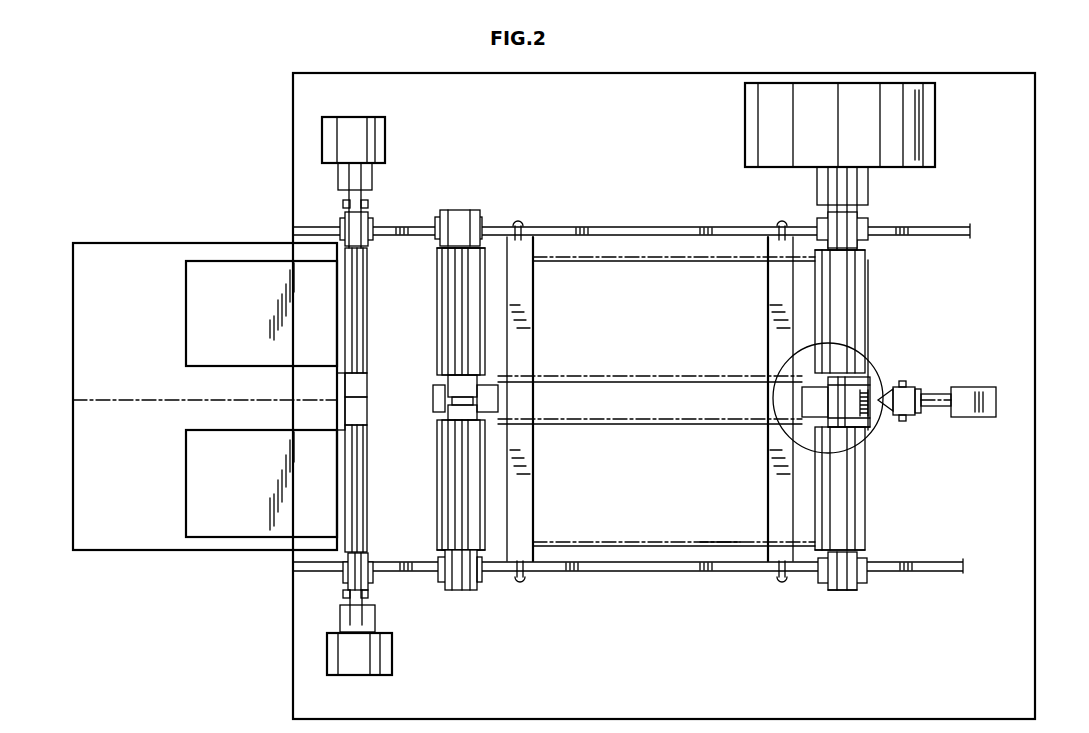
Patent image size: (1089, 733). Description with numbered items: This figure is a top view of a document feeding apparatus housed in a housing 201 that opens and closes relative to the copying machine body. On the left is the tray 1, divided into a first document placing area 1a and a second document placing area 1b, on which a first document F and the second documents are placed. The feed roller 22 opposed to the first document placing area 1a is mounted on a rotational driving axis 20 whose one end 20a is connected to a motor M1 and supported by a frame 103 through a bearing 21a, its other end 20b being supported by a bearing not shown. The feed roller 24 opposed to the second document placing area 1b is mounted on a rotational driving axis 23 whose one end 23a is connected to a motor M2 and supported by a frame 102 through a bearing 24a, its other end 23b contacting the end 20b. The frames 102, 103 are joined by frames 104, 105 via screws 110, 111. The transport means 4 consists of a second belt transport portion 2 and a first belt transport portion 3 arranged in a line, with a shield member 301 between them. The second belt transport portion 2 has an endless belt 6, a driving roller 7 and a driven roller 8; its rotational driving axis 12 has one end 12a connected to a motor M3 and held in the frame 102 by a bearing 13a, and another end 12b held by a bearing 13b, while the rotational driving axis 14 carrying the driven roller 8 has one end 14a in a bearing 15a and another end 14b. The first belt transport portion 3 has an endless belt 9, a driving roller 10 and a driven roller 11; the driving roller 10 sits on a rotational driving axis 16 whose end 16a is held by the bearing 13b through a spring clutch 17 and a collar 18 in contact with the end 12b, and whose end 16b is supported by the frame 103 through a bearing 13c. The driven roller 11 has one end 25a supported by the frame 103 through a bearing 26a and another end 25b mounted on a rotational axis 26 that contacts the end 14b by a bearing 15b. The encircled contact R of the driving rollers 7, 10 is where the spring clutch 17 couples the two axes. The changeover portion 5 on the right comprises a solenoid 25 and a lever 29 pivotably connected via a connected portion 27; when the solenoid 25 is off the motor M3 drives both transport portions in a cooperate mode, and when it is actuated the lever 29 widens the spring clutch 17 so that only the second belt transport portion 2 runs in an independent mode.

The housing 201 is at (1038, 76).
The tray 1 is at (108, 552).
The first document placing area 1a is at (137, 462).
The second document placing area 1b is at (137, 320).
The first document F is at (186, 509).
The frame 102 is at (608, 228).
The frame 103 is at (628, 573).
The frame 104 is at (522, 298).
The frame 105 is at (786, 289).
The endless belt 6 is at (655, 300).
The endless belt 9 is at (667, 483).
The second belt transport portion 2 is at (648, 254).
The shield member 301 is at (684, 378).
The first belt transport portion 3 is at (680, 548).
The transport means 4 is at (716, 552).
The screws 110 is at (520, 221).
The screws 111 is at (522, 580).
The motor M2 is at (336, 132).
The one end of rotational driving axis 23 23a is at (350, 178).
The bearing 24a is at (343, 214).
The rotational driving axis 23 is at (346, 238).
The feed roller 24 is at (357, 300).
The another end of rotational driving axis 23 23b is at (356, 386).
The another end of rotational driving axis 20 20b is at (358, 412).
The feed roller 22 is at (358, 460).
The bearing 21a is at (343, 578).
The one end of rotational driving axis 20 20a is at (348, 616).
The rotational driving axis 20 is at (360, 612).
The motor M1 is at (340, 660).
The bearing 15a is at (481, 216).
The one end of rotational driving axis 14 14a is at (470, 210).
The rotational driving axis 14 is at (450, 210).
The driven roller 8 is at (436, 250).
The another end of rotational driving axis 14 14b is at (466, 388).
The another end of driven roller 11 25b is at (466, 410).
The bearing 15b is at (500, 398).
The driven roller 11 is at (438, 549).
The bearing 26a is at (447, 586).
The rotational axis 26 is at (462, 590).
The one end of driven roller 11 25a is at (478, 588).
The motor M3 is at (932, 136).
The rotational driving axis 12 is at (838, 214).
The one end of rotational driving axis 12 12a is at (845, 194).
The bearing 13a is at (870, 226).
The driving roller 7 is at (868, 251).
The bearing 13b is at (812, 400).
The spring clutch 17 is at (858, 386).
The another end of rotational driving axis 12 12b is at (836, 394).
The collar 18 is at (868, 408).
The one end of rotational driving axis 16 16a is at (858, 432).
The contact R is at (828, 452).
The driving roller 10 is at (868, 553).
The rotational driving axis 16 is at (868, 563).
The bearing 13c is at (830, 591).
The another end of rotational driving axis 16 16b is at (857, 591).
The changeover portion 5 is at (973, 407).
The connected portion 27 is at (930, 392).
The lever 29 is at (906, 421).
The solenoid 25 is at (1000, 396).